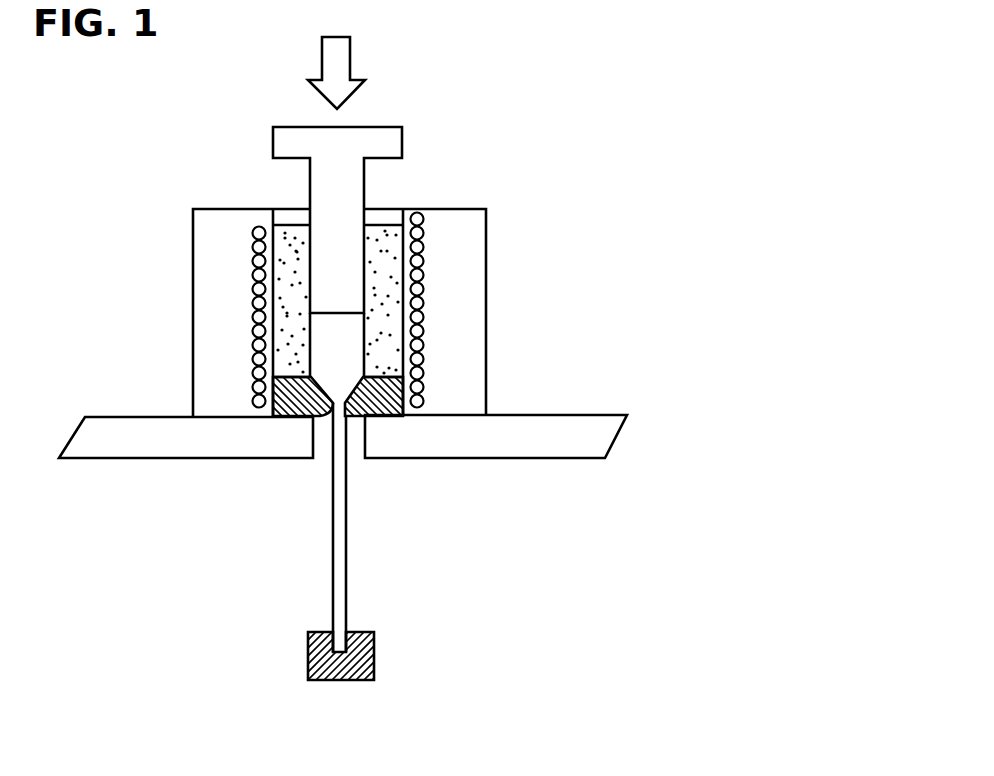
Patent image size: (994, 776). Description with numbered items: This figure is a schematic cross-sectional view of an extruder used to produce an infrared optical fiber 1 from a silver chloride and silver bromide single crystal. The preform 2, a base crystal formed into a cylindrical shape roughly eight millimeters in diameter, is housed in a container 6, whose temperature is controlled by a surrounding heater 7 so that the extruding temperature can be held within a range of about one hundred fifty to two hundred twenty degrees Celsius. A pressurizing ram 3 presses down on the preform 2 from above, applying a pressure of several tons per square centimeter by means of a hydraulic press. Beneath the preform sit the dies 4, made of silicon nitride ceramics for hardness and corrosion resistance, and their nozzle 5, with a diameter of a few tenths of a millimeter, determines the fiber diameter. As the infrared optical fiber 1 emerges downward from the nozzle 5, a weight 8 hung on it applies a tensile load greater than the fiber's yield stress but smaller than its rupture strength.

The infrared optical fiber 1 is at (340, 500).
The preform 2 is at (334, 338).
The pressurizing ram 3 is at (365, 182).
The dies 4 is at (378, 398).
The nozzle 5 is at (348, 417).
The container 6 is at (387, 247).
The heater 7 is at (253, 287).
The weight 8 is at (308, 655).